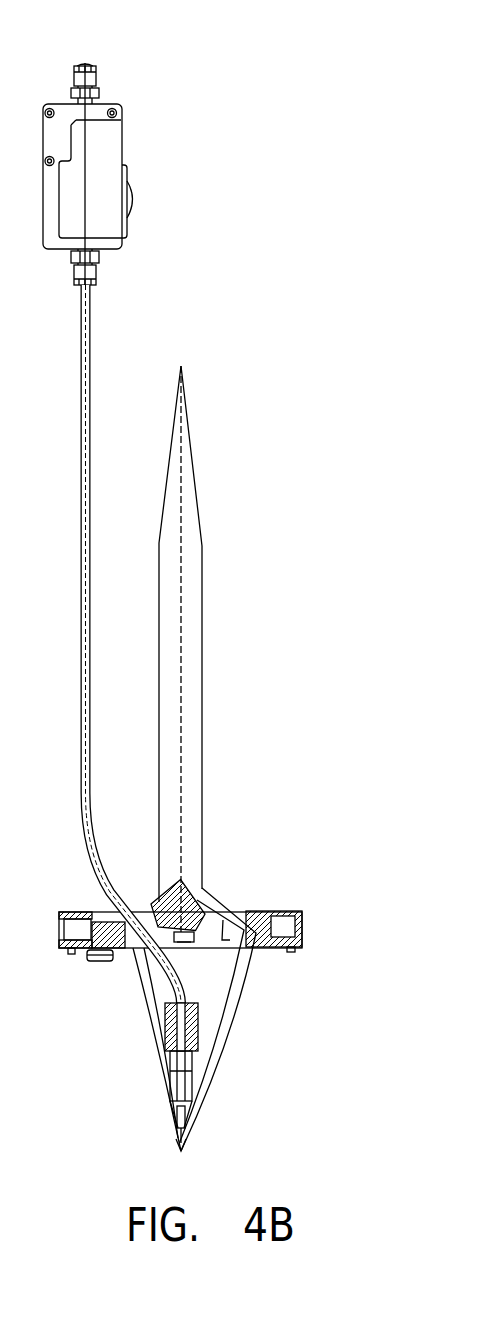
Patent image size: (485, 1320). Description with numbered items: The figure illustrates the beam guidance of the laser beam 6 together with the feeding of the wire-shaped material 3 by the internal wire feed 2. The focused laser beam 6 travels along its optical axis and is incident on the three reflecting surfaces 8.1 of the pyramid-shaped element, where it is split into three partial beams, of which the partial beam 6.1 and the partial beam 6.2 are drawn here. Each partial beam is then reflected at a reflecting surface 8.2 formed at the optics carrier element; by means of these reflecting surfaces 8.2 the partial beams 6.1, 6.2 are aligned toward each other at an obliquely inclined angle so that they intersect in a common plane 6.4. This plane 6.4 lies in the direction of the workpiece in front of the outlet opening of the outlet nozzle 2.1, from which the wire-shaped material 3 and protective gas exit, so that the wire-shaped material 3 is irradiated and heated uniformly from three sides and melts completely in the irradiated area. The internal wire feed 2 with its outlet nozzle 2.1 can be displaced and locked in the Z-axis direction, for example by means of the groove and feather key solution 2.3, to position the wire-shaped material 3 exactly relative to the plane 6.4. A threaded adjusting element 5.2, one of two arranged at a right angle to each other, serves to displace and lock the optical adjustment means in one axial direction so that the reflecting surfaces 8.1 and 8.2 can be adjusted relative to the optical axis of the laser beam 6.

The internal wire feed 2 is at (73, 386).
The outlet nozzle 2.1 is at (163, 1083).
The groove and feather key solution 2.3 is at (158, 1023).
The wire-shaped material 3 is at (176, 1108).
The adjusting element 5.2 is at (281, 922).
The laser beam 6 is at (180, 601).
The partial beam 6.1 is at (238, 973).
The partial beam 6.2 is at (138, 980).
The common plane of intersection 6.4 is at (174, 1143).
The reflecting surfaces of the pyramid-shaped element 8.1 is at (186, 896).
The reflecting surfaces of the optics carrier element 8.2 is at (256, 914).